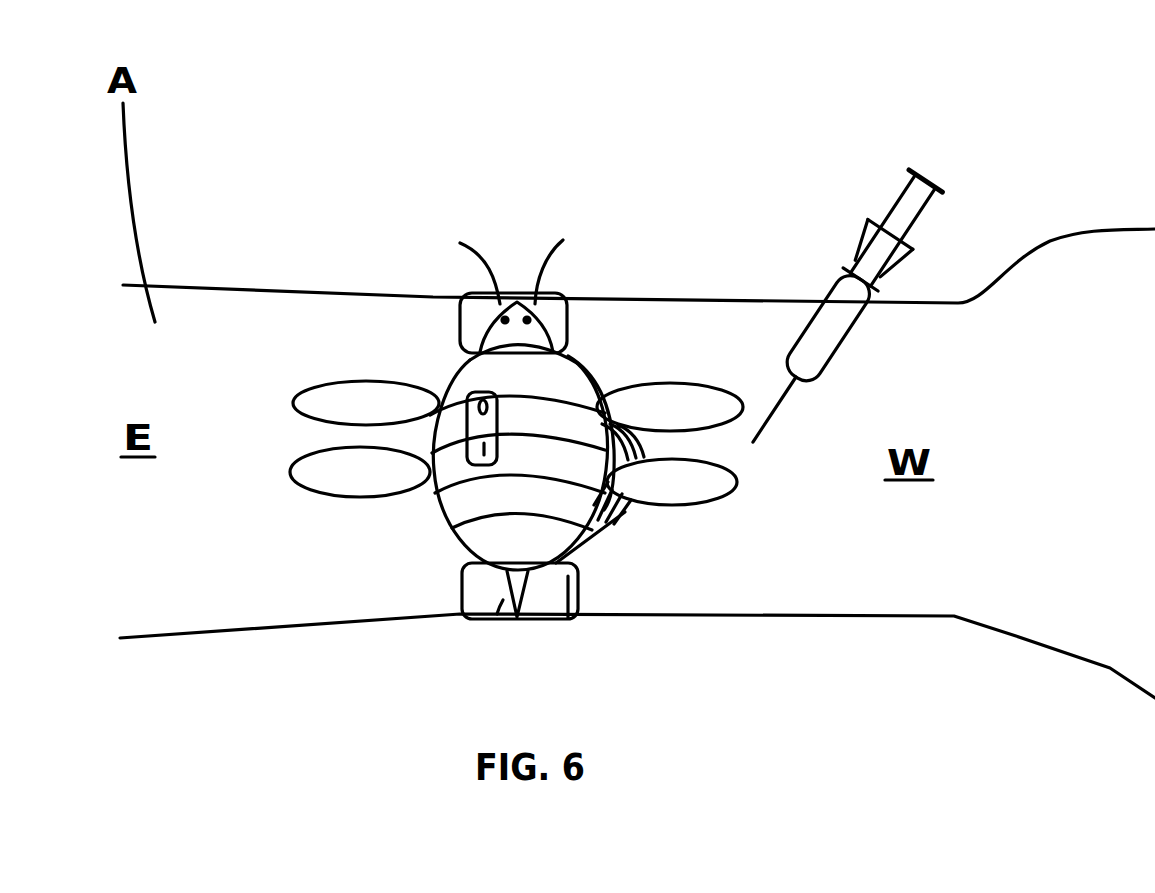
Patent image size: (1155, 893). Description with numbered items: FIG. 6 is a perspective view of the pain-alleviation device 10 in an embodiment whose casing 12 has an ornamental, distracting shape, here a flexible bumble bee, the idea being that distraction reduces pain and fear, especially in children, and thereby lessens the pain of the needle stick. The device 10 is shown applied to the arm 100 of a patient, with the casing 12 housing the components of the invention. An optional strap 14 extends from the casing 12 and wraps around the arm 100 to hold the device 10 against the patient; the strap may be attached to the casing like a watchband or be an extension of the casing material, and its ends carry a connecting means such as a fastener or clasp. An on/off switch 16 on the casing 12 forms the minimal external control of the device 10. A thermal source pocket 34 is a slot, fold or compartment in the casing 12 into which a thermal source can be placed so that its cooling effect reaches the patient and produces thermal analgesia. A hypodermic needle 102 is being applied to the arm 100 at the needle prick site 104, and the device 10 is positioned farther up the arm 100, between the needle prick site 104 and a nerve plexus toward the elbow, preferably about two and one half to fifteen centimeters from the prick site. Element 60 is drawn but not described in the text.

The device 10 is at (406, 241).
The casing 12 is at (578, 360).
The strap 14 is at (498, 603).
The on/off switch 16 is at (470, 426).
The thermal source pocket 34 is at (598, 508).
The segmented body / housing 60 is at (463, 505).
The arm 100 is at (304, 457).
The hypodermic needle 102 is at (772, 418).
The needle prick site 104 is at (761, 466).